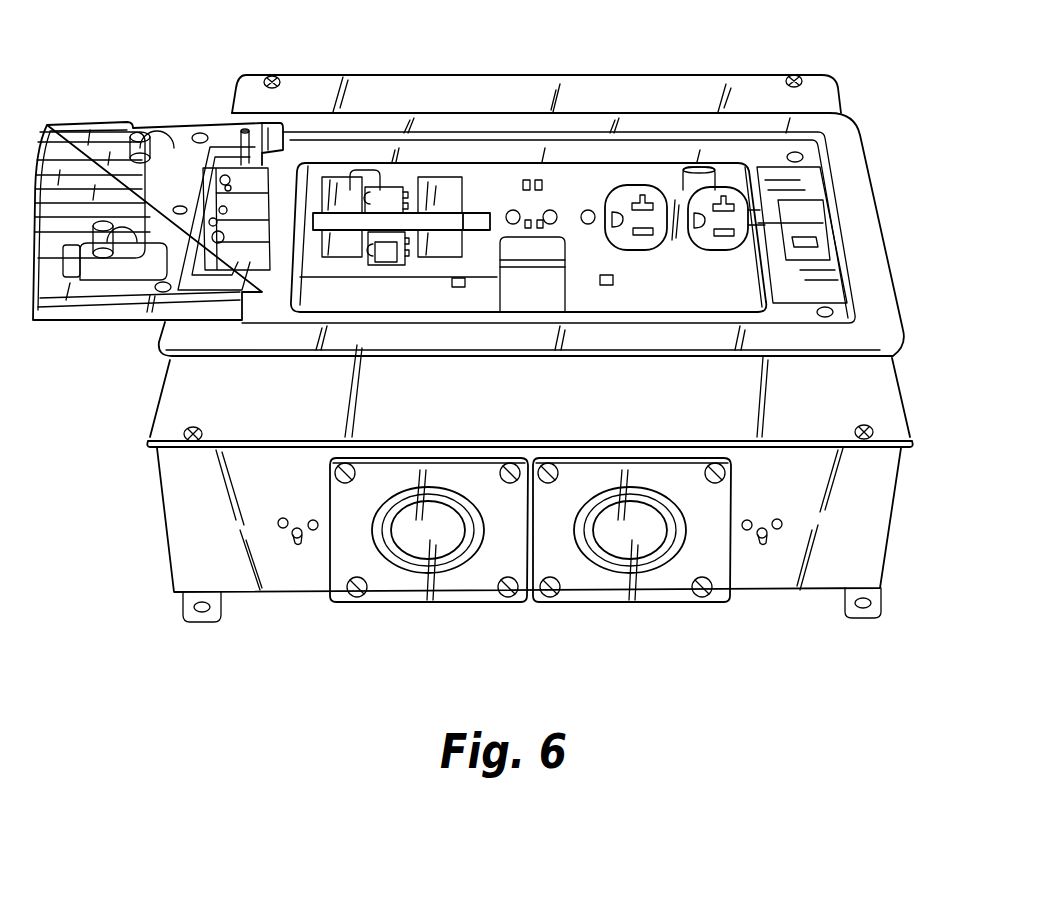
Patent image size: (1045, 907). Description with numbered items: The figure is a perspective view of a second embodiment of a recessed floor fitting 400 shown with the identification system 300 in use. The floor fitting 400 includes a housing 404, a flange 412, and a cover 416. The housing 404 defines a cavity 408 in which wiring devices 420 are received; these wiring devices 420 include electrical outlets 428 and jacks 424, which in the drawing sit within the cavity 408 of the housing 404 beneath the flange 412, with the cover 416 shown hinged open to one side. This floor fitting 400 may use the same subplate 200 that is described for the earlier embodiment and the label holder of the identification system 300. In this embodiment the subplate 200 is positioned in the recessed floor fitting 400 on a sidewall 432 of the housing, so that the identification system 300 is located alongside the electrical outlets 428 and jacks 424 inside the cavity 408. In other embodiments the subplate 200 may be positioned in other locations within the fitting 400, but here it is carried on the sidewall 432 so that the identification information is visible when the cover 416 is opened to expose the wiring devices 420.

The recessed floor fitting 400 is at (286, 687).
The housing 404 is at (193, 523).
The flange 412 is at (878, 297).
The cover 416 is at (173, 138).
The subplate 200 is at (497, 193).
The identification system 300 is at (344, 218).
The wiring devices 420 is at (399, 145).
The jacks 424 is at (392, 180).
The cavity 408 is at (667, 188).
The electrical outlets 428 is at (625, 196).
The sidewall 432 is at (740, 253).